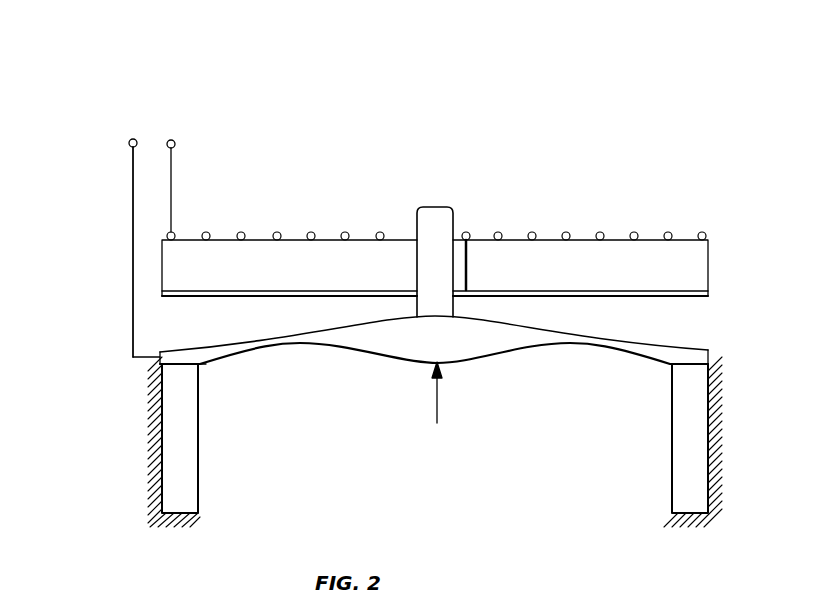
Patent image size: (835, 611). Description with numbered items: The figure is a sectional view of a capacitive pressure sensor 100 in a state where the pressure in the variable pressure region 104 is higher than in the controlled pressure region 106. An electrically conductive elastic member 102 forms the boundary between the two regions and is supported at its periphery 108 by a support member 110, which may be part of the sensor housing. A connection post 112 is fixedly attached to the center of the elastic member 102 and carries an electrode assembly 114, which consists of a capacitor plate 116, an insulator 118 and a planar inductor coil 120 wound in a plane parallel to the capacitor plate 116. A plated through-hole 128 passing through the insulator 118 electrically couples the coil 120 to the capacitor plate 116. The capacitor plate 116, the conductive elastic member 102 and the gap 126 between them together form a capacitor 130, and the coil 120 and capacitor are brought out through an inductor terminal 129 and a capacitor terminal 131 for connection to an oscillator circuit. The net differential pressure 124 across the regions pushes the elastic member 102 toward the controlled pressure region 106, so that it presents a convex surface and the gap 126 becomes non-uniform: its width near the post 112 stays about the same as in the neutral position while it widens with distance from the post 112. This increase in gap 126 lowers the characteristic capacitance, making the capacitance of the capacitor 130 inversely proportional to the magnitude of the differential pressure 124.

The capacitive pressure sensor 100 is at (762, 570).
The elastic member 102 is at (553, 343).
The variable pressure region 104 is at (312, 460).
The controlled pressure region 106 is at (326, 152).
The periphery 108 is at (205, 366).
The support member 110 is at (180, 420).
The connection post 112 is at (440, 218).
The electrode assembly 114 is at (95, 196).
The capacitor plate 116 is at (162, 296).
The insulator 118 is at (692, 270).
The planar inductor coil 120 is at (671, 231).
The net differential pressure 124 is at (440, 402).
The gap 126 is at (200, 322).
The plated through-hole 128 is at (470, 268).
The inductor terminal 129 is at (171, 140).
The capacitor 130 is at (117, 272).
The capacitor terminal 131 is at (133, 139).